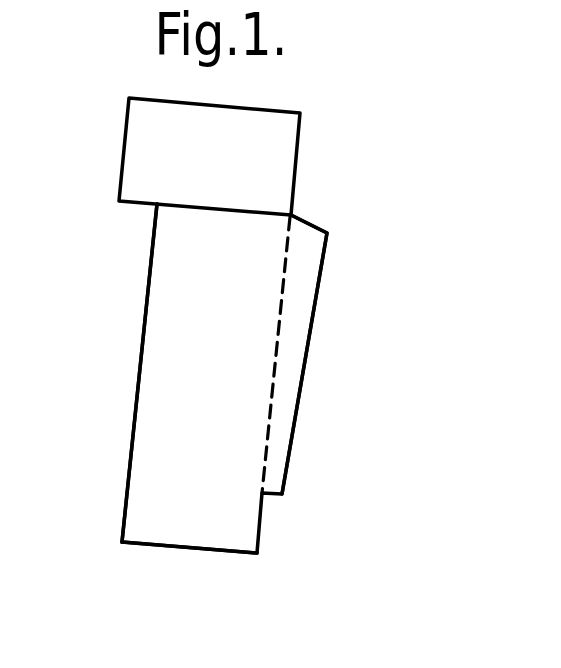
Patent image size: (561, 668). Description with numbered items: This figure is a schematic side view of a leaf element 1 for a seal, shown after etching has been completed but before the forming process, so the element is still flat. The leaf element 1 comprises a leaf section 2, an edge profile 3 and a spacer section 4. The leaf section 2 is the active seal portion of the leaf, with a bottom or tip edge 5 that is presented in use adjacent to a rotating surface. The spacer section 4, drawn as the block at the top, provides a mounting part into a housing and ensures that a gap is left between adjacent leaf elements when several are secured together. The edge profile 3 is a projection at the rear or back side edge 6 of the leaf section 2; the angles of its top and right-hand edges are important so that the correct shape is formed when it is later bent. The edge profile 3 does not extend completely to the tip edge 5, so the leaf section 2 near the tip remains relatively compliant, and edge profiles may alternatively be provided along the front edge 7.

The leaf element 1 is at (340, 173).
The leaf section 2 is at (173, 362).
The edge profile 3 is at (303, 305).
The spacer section 4 is at (158, 150).
The tip edge 5 is at (195, 550).
The back side edge 6 is at (268, 422).
The front edge 7 is at (148, 288).